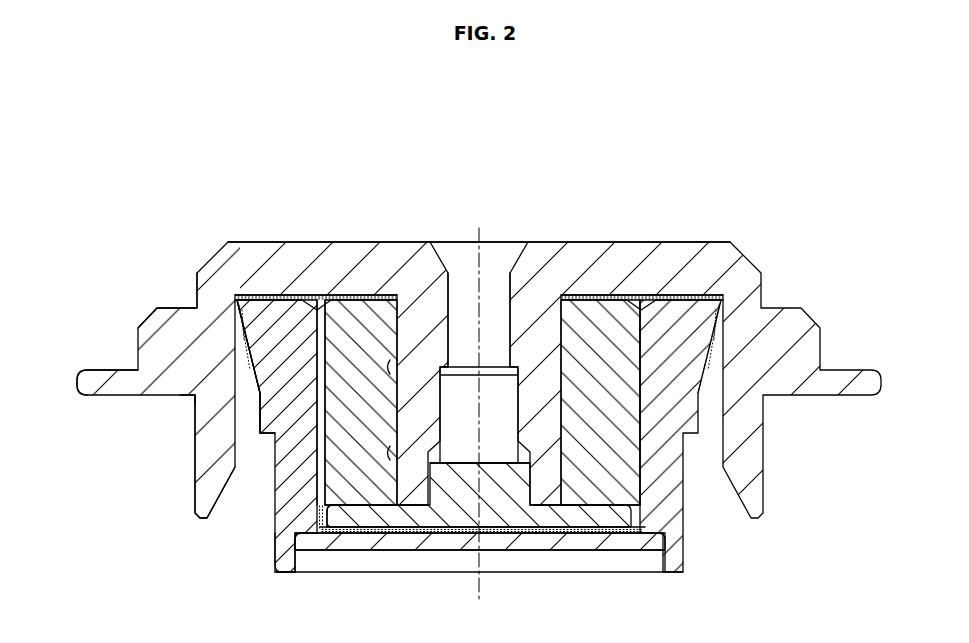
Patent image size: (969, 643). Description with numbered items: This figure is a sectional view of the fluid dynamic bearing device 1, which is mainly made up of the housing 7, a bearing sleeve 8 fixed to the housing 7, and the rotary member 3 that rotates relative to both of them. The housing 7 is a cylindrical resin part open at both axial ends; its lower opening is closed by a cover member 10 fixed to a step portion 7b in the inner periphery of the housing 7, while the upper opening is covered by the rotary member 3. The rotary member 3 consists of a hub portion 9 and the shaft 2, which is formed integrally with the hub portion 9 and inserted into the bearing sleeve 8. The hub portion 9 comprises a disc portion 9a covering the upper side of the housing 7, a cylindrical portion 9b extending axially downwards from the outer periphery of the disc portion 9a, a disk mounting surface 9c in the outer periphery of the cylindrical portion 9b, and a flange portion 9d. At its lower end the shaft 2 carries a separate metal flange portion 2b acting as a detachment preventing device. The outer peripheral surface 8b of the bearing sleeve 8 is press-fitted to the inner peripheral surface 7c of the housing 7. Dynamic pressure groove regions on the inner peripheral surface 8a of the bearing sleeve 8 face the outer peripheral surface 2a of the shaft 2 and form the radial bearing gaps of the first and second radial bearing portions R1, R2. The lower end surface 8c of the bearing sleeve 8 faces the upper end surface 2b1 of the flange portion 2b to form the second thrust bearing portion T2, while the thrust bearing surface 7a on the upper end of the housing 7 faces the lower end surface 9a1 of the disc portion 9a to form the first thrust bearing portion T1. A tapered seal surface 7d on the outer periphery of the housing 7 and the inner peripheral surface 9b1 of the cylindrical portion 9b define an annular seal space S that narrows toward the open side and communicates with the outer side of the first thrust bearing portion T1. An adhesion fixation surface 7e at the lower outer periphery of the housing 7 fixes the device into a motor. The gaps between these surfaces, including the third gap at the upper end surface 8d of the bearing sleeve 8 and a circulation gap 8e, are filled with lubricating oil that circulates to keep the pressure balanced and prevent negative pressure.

The fluid dynamic bearing device 1 is at (578, 176).
The shaft 2 is at (558, 366).
The outer peripheral surface of the shaft 2a is at (575, 468).
The flange portion 2b is at (562, 518).
The upper end surface of the flange portion 2b1 is at (368, 505).
The rotary member 3 is at (300, 236).
The housing 7 is at (685, 372).
The thrust bearing surface 7a is at (265, 297).
The step portion 7b is at (310, 553).
The inner peripheral surface of the housing 7c is at (640, 357).
The tapered seal surface 7d is at (235, 368).
The adhesion fixation surface 7e is at (275, 545).
The bearing sleeve 8 is at (620, 472).
The inner peripheral surface of the bearing sleeve 8a is at (548, 432).
The outer peripheral surface of the bearing sleeve 8b is at (326, 379).
The lower end surface of the bearing sleeve 8c is at (340, 510).
The upper end surface of the bearing sleeve 8d is at (378, 297).
The circulation gap 8e is at (316, 508).
The hub portion 9 is at (683, 240).
The disc portion 9a is at (605, 265).
The lower end surface of the disc portion 9a1 is at (330, 290).
The cylindrical portion 9b is at (208, 440).
The inner peripheral surface of the cylindrical portion 9b1 is at (200, 392).
The disk mounting surface 9c is at (175, 305).
The flange portion of the hub 9d is at (107, 385).
The cover member 10 is at (460, 543).
The seal space S is at (228, 342).
The first thrust bearing portion T1 is at (280, 297).
The second thrust bearing portion T2 is at (356, 530).
The first radial bearing portion R1 is at (380, 368).
The second radial bearing portion R2 is at (380, 454).